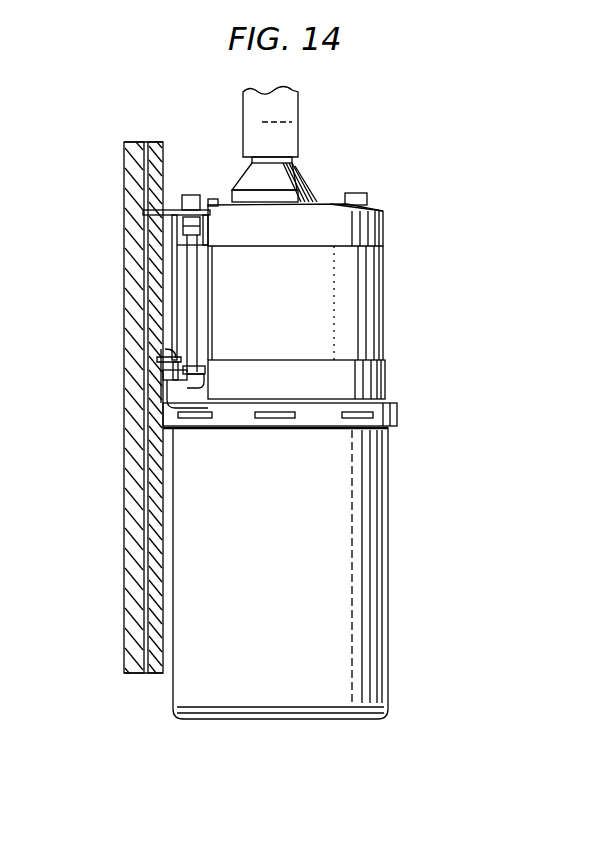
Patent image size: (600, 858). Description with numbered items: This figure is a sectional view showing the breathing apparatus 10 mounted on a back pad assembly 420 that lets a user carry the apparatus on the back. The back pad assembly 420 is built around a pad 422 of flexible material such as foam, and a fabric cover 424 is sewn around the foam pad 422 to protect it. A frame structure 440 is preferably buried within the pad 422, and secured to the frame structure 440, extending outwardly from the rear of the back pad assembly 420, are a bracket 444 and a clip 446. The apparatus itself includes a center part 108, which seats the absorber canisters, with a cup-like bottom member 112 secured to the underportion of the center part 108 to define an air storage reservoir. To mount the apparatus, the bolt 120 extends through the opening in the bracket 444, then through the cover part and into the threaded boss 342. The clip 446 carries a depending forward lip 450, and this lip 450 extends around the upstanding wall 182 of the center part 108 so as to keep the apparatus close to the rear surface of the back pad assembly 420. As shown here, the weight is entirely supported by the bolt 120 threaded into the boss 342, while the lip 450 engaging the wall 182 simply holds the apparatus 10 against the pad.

The breathing apparatus 10 is at (341, 176).
The center part 108 is at (389, 364).
The cup-like bottom member 112 is at (281, 575).
The bolt 120 is at (197, 194).
The upstanding wall 182 is at (178, 375).
The threaded boss 342 is at (200, 370).
The back pad assembly 420 is at (128, 180).
The pad 422 is at (142, 238).
The fabric cover 424 is at (161, 153).
The frame structure 440 is at (148, 573).
The bracket 444 is at (172, 214).
The clip 446 is at (166, 355).
The depending forward lip 450 is at (205, 379).